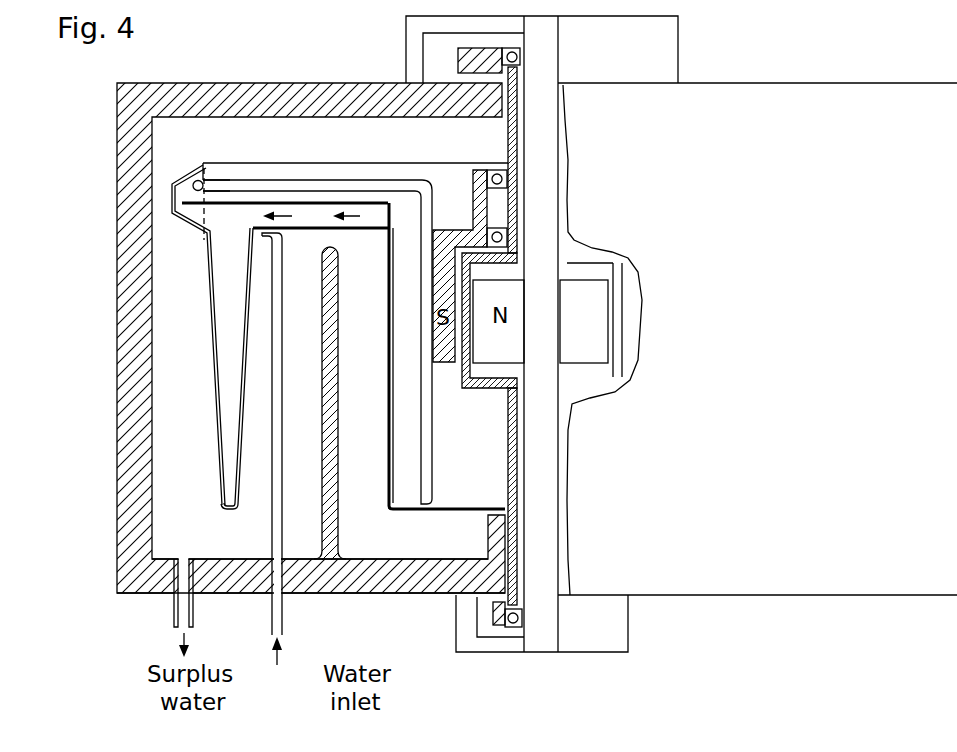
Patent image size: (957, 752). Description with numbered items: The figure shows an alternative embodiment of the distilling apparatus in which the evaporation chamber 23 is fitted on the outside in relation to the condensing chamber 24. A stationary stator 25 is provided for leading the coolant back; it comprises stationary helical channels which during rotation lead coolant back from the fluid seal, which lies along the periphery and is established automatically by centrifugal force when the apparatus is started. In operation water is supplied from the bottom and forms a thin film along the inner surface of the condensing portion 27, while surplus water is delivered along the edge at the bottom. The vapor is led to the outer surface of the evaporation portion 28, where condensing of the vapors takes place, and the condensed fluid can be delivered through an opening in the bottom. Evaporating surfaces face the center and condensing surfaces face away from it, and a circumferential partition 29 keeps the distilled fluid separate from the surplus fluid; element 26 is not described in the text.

The evaporation chamber 23 is at (215, 356).
The condensing chamber 24 is at (206, 403).
The stationary stator 25 is at (275, 164).
The nozzle outlet 26 is at (136, 197).
The condensing portion 27 is at (133, 335).
The evaporation portion 28 is at (274, 349).
The circumferential partition 29 is at (186, 581).